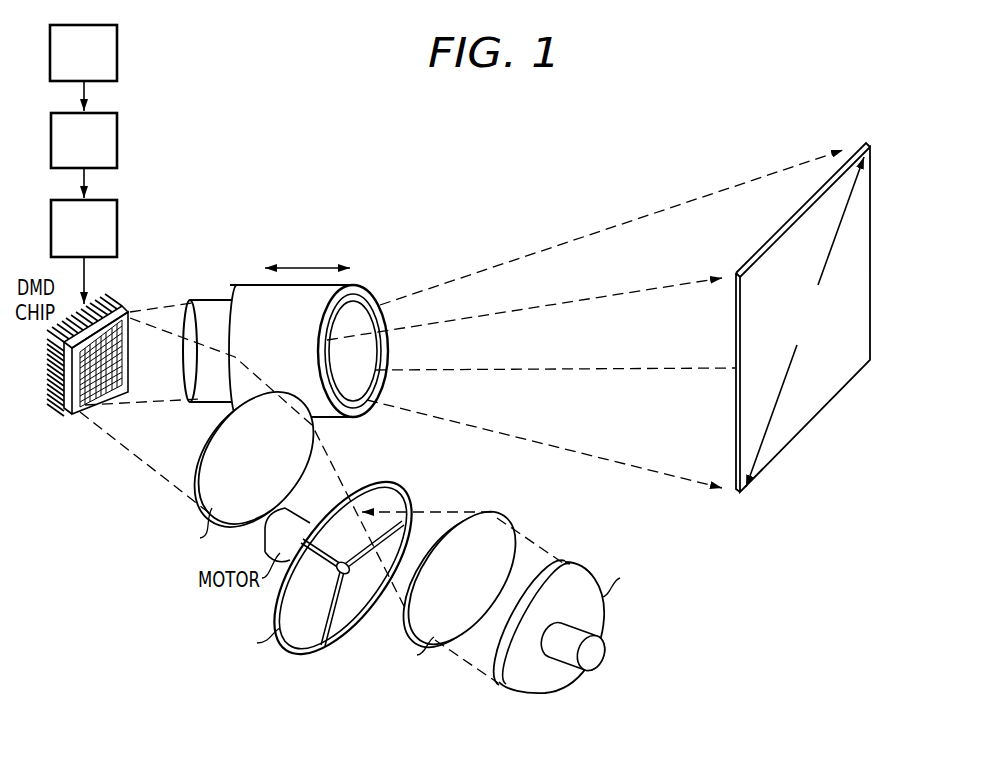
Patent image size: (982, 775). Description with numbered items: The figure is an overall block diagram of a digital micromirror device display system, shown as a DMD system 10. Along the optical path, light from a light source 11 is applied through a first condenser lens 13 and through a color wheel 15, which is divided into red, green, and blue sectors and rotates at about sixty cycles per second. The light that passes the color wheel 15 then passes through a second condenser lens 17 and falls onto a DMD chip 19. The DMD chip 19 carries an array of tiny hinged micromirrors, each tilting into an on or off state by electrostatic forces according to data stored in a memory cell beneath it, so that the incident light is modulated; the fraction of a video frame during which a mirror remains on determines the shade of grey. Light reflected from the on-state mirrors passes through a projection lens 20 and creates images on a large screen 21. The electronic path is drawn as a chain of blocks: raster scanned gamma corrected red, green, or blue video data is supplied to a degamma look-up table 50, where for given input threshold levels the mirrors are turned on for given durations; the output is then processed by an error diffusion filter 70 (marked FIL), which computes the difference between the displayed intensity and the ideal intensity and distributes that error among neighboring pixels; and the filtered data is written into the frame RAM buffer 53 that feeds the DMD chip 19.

The DMD system 10 is at (110, 660).
The light source 11 is at (548, 682).
The first condenser lens 13 is at (498, 520).
The color wheel 15 is at (383, 489).
The second condenser lens 17 is at (213, 488).
The DMD chip 19 is at (66, 413).
The projection lens 20 is at (368, 290).
The screen 21 is at (807, 413).
The degamma look-up table 50 is at (69, 65).
The frame RAM buffer 53 is at (118, 222).
The error diffusion filter 70 is at (118, 137).